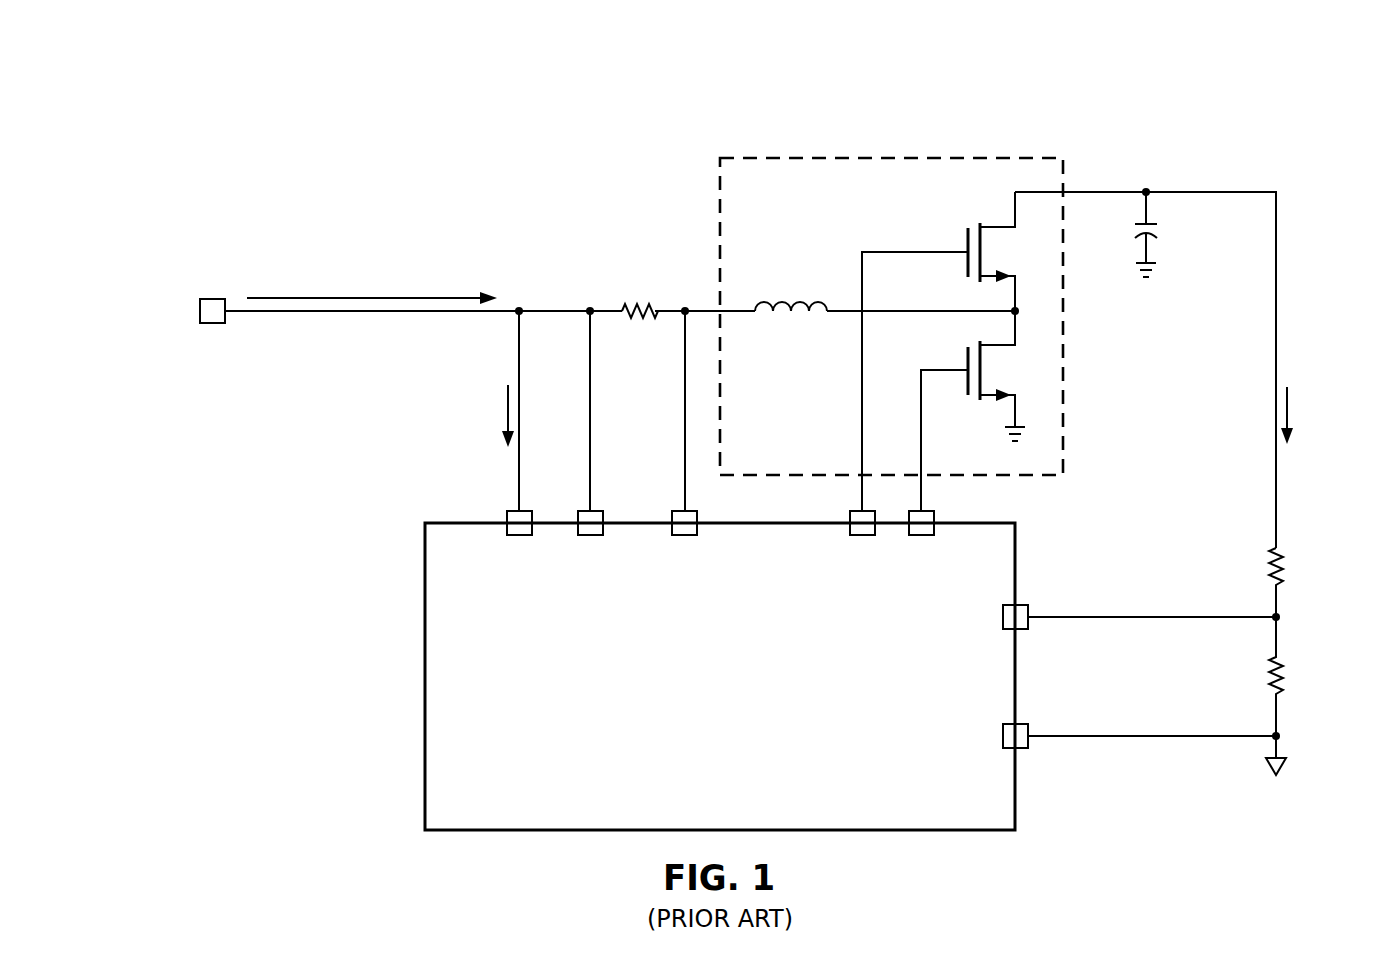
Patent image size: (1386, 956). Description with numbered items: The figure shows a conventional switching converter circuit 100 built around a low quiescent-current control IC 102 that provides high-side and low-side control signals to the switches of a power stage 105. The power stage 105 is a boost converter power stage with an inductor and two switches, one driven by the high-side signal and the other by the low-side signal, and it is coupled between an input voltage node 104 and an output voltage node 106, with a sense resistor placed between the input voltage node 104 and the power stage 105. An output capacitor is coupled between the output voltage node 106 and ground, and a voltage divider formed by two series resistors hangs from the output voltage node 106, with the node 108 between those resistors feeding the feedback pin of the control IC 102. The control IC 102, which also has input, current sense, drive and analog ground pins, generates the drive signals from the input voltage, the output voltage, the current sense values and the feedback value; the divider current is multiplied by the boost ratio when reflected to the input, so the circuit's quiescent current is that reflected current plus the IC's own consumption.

The switching converter circuit 100 is at (397, 126).
The low Iq control IC 102 is at (744, 726).
The input voltage (VIN) node 104 is at (213, 324).
The power stage 105 is at (947, 156).
The output voltage (VOUT) node 106 is at (1141, 198).
The node between R1 and R2 108 is at (1271, 625).